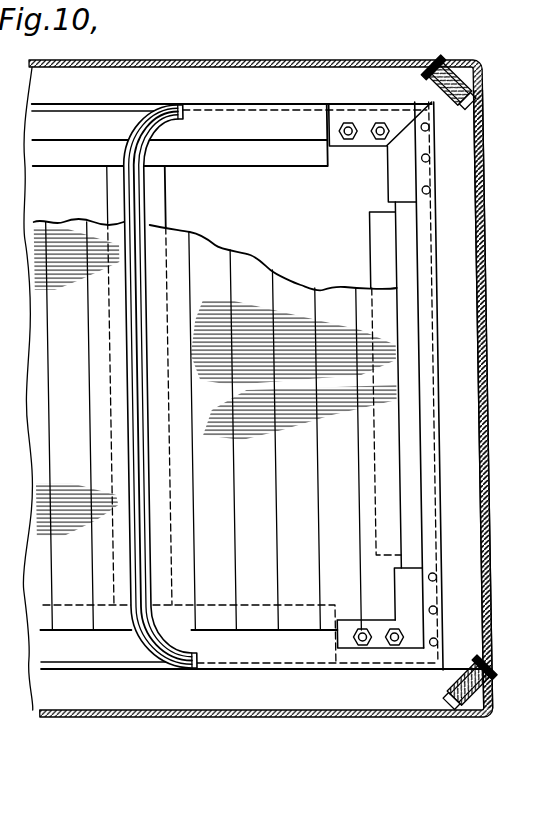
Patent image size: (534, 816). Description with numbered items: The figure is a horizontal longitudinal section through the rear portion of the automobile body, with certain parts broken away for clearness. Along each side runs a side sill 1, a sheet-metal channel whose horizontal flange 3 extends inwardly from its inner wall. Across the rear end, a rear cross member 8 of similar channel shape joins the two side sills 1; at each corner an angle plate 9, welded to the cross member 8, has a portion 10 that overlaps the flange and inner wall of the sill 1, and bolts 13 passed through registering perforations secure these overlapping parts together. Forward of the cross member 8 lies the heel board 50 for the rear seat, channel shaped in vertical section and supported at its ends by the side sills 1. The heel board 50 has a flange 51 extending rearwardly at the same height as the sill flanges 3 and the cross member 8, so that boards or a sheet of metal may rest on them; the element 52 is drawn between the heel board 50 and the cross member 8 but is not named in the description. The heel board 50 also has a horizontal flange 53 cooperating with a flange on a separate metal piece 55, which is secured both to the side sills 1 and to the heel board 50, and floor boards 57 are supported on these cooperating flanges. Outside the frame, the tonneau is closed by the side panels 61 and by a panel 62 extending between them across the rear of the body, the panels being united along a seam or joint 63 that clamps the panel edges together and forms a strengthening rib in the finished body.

The side sill 1 is at (248, 118).
The horizontal flange 3 is at (314, 155).
The rear cross member 8 is at (402, 298).
The angle plate 9 is at (396, 158).
The overlapping portion 10 is at (335, 128).
The bolts 13 is at (385, 124).
The heel board 50 is at (137, 210).
The flange 51 is at (150, 214).
The panel boards 52 is at (298, 297).
The horizontal flange 53 is at (114, 203).
The metal piece 55 is at (60, 112).
The floor boards 57 is at (28, 585).
The side panels 61 is at (336, 60).
The rear panel 62 is at (481, 318).
The seam or joint 63 is at (449, 62).